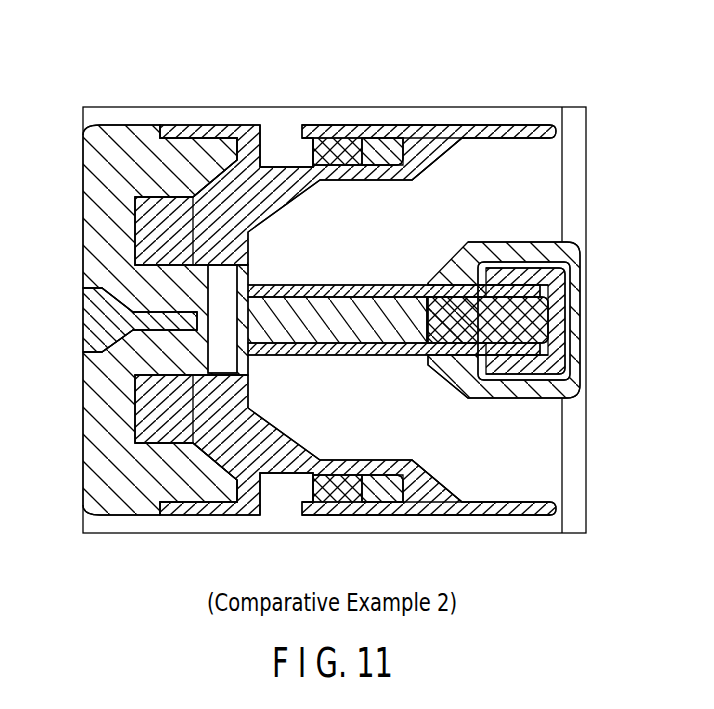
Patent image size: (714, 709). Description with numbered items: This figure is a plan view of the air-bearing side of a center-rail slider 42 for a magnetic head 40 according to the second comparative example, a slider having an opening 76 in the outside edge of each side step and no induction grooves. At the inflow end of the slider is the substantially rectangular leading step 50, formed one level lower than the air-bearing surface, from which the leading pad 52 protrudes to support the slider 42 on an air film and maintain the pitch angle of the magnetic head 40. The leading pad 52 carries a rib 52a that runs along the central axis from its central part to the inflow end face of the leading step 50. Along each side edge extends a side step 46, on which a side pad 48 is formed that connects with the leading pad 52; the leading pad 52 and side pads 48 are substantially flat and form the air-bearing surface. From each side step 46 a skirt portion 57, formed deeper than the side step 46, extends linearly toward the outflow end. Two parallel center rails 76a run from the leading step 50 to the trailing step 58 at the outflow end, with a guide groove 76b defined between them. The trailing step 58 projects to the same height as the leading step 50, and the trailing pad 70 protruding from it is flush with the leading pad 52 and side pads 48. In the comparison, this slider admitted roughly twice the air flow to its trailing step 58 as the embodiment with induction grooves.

The magnetic head 40 is at (352, 307).
The slider 42 is at (180, 98).
The side step 46 is at (366, 128).
The side pad 48 is at (427, 166).
The leading step 50 is at (90, 433).
The leading pad 52 is at (148, 232).
The rib 52a is at (88, 320).
The skirt portion 57 is at (499, 130).
The trailing step 58 is at (565, 381).
The trailing pad 70 is at (572, 327).
The opening 76 is at (279, 135).
The center rail 76a is at (380, 291).
The guide groove 76b is at (405, 330).